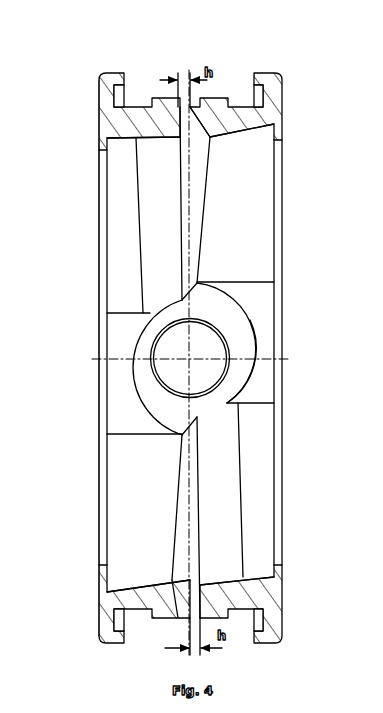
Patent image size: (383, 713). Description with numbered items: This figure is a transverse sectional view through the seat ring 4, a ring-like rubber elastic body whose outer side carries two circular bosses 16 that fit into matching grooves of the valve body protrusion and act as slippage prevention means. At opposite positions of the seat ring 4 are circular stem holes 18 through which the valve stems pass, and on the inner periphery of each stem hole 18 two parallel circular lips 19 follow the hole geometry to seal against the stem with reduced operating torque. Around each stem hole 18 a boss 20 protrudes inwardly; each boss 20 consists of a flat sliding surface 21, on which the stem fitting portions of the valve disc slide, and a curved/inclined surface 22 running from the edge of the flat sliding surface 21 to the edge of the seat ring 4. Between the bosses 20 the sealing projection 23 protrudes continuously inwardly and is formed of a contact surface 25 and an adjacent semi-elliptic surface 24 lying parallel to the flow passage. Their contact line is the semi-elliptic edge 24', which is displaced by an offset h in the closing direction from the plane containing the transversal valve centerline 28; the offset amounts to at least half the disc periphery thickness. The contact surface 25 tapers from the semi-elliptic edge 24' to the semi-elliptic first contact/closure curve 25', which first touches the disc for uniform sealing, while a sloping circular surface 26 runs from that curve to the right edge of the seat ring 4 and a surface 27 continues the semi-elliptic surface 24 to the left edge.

The seat ring 4 is at (94, 559).
The circular bosses 16 is at (153, 102).
The stem holes 18 is at (197, 333).
The circular lips 19 is at (229, 352).
The bosses 20 is at (134, 342).
The flat sliding surface 21 is at (238, 383).
The curved/inclined surface 22 is at (115, 390).
The sealing projection 23 is at (201, 162).
The semi-elliptic surface 24 is at (181, 356).
The semi-elliptic edge 24' is at (184, 362).
The contact surface 25 is at (259, 356).
The semi-elliptic first contact/closure curve 25' is at (267, 301).
The sloping circular surface 26 is at (115, 478).
The surface 27 is at (120, 285).
The transversal valve centerline 28 is at (190, 530).